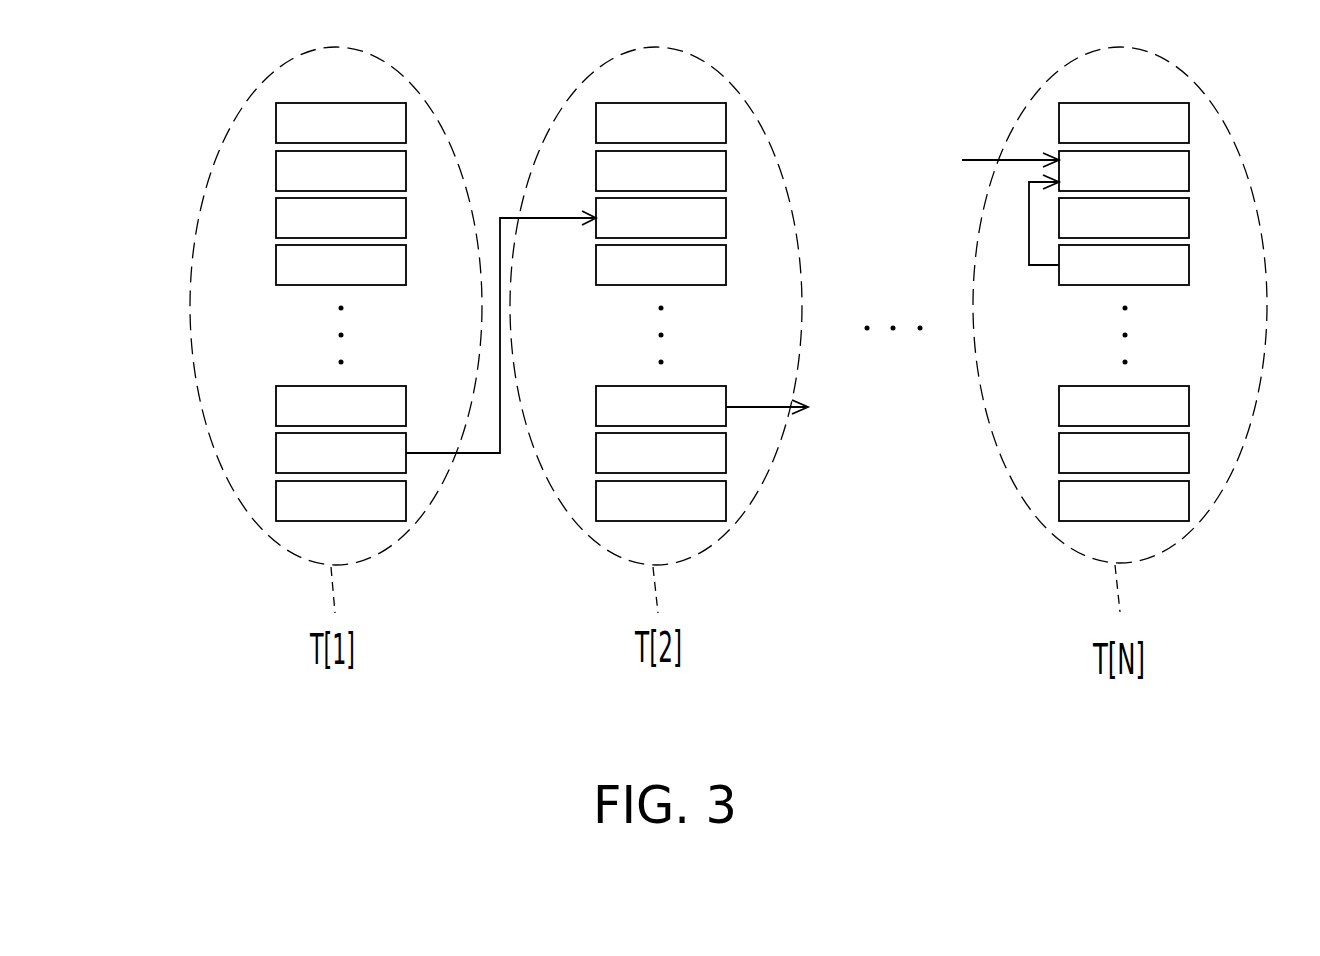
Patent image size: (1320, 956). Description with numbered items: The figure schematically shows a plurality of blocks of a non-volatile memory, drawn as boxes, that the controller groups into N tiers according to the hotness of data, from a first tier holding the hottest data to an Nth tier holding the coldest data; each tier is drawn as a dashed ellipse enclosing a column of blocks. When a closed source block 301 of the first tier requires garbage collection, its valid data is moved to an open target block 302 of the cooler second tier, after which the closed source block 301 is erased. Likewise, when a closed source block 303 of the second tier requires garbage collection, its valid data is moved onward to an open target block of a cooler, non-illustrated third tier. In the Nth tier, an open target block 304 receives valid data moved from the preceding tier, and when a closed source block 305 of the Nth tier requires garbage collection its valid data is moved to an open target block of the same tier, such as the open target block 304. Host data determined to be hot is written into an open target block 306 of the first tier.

The closed source block 301 is at (275, 453).
The open target block 302 is at (726, 218).
The closed source block 303 is at (705, 386).
The open target block 304 is at (1189, 170).
The closed source block 305 is at (1189, 264).
The open target block 306 is at (275, 125).